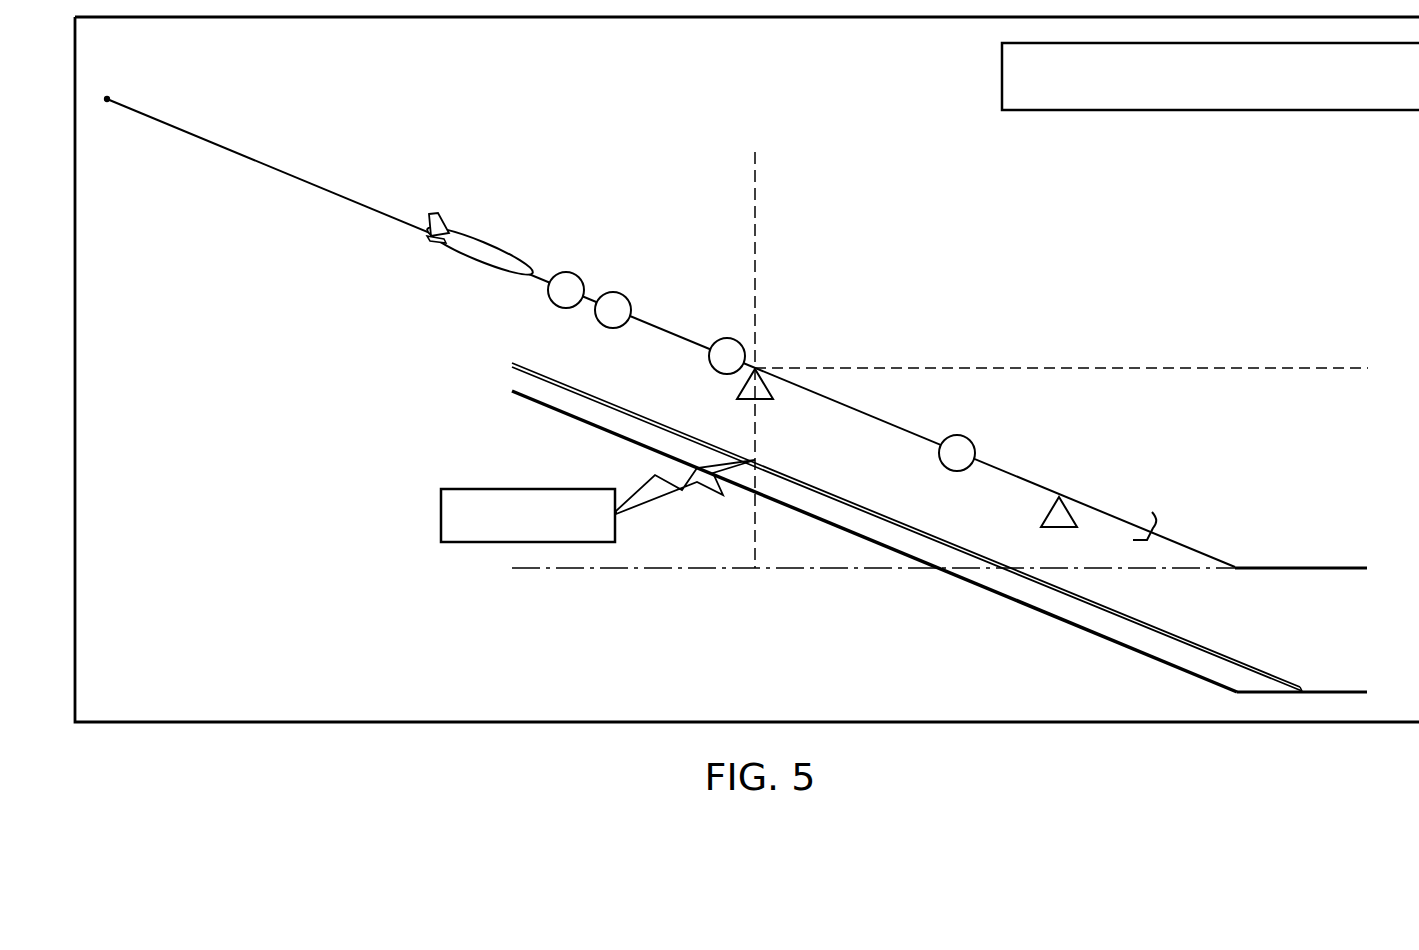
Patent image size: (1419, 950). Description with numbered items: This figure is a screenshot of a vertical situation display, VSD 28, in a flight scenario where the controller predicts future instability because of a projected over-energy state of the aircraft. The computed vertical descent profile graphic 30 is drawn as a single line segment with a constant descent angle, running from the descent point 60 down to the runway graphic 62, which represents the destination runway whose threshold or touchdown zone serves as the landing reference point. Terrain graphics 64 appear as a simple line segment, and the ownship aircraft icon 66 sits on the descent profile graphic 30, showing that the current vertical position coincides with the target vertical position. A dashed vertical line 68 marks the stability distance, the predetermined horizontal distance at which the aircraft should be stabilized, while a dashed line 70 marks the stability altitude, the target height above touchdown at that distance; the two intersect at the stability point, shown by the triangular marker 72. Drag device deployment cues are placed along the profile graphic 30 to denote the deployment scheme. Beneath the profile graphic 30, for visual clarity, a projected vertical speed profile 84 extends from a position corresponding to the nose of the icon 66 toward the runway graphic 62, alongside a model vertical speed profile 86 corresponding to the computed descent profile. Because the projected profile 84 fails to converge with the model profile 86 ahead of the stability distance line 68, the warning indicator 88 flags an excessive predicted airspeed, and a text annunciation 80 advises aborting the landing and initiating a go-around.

The vertical situation display 28 is at (122, 58).
The computed vertical descent profile graphic 30 is at (342, 197).
The descent point 60 is at (108, 102).
The ownship aircraft icon 66 is at (463, 244).
The stability altitude dashed line 70 is at (1104, 367).
The stability distance dashed vertical line 68 is at (754, 550).
The triangular marker 72 is at (739, 393).
The terrain graphics 64 is at (1190, 572).
The runway graphic 62 is at (1287, 572).
The projected vertical speed profile 84 is at (541, 361).
The model vertical speed profile 86 is at (557, 407).
The warning indicator 88 is at (440, 512).
The text annunciation 80 is at (1228, 112).